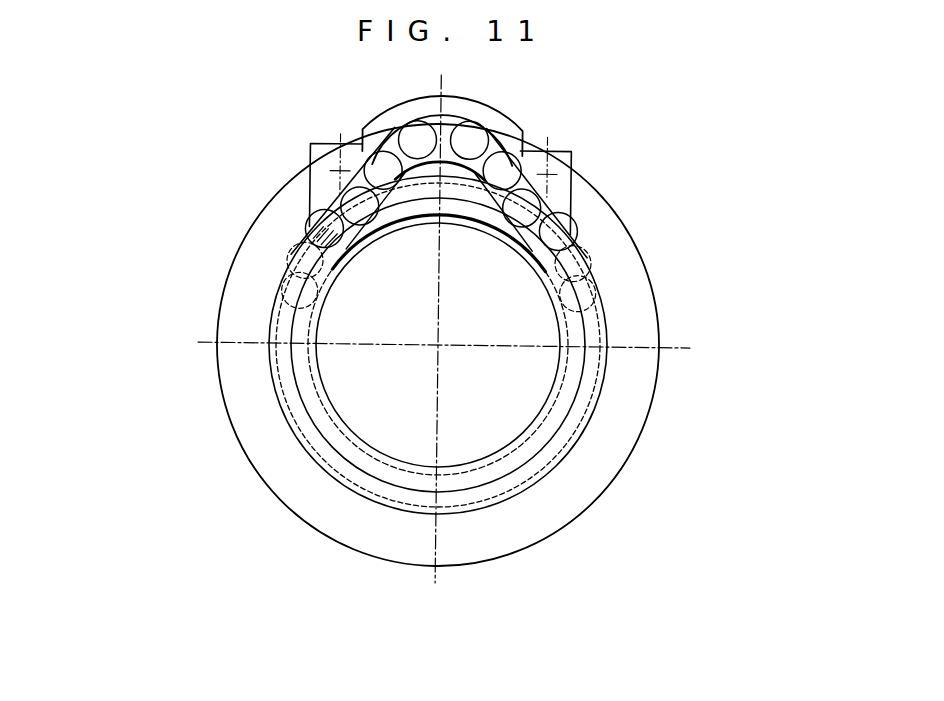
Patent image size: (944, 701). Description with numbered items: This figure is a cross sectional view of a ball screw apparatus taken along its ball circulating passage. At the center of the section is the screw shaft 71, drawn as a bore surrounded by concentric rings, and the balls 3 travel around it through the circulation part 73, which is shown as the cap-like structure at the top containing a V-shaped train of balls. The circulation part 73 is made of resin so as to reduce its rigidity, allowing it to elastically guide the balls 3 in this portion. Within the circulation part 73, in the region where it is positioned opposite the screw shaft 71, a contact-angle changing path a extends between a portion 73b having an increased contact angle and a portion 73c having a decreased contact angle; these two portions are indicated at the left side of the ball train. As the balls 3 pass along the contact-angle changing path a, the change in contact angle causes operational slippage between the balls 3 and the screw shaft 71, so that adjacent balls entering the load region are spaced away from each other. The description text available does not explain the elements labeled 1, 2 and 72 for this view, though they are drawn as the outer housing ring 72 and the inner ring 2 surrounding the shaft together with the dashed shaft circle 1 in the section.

The shaft 1 is at (320, 400).
The bearing inner ring 2 is at (273, 310).
The balls 3 is at (447, 187).
The screw shaft 71 is at (498, 378).
The housing 72 is at (613, 435).
The circulation part 73 is at (487, 112).
The portion having an increased contact angle 73b is at (333, 223).
The portion having a decreased contact angle 73c is at (309, 232).
The contact-angle changing path a is at (440, 200).